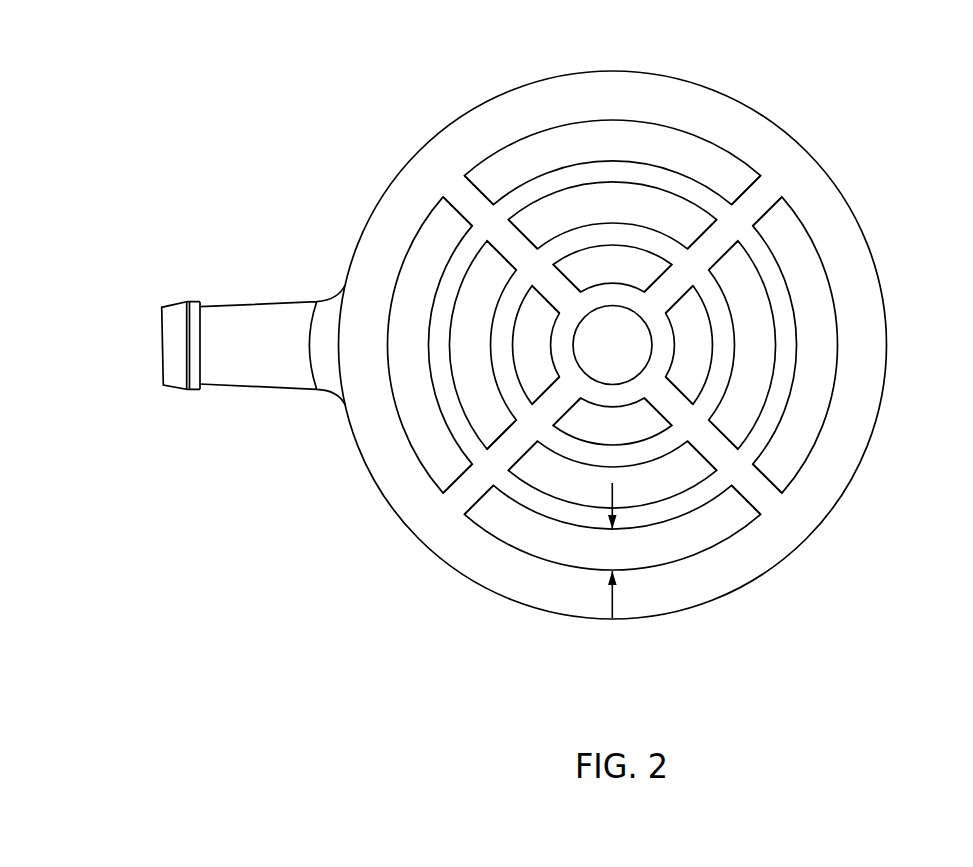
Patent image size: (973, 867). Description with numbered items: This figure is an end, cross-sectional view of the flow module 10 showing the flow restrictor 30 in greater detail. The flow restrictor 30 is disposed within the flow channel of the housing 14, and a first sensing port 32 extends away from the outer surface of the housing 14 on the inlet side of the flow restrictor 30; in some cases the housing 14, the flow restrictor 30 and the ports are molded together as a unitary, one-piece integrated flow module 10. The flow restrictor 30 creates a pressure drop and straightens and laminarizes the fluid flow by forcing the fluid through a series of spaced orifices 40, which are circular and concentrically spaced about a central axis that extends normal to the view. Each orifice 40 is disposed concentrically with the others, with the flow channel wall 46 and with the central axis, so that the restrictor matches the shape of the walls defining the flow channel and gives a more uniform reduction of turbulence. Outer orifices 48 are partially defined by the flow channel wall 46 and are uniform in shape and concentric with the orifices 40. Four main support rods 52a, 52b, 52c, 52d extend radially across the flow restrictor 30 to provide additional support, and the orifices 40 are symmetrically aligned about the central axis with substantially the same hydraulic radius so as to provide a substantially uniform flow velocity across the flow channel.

The flow module 10 is at (847, 90).
The housing 14 is at (480, 102).
The flow restrictor 30 is at (800, 349).
The first sensing port 32 is at (258, 303).
The orifices 40 is at (593, 202).
The flow channel wall 46 is at (817, 248).
The outer orifices 48 is at (662, 145).
The main support rod 52a is at (712, 243).
The main support rod 52b is at (720, 448).
The main support rod 52c is at (503, 450).
The main support rod 52d is at (511, 247).